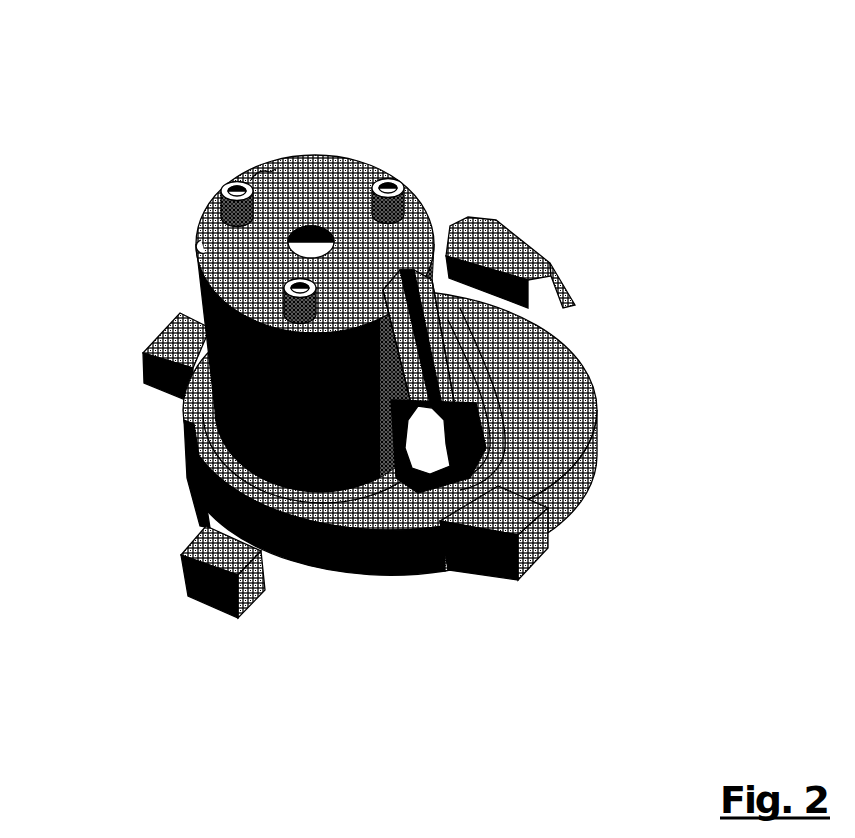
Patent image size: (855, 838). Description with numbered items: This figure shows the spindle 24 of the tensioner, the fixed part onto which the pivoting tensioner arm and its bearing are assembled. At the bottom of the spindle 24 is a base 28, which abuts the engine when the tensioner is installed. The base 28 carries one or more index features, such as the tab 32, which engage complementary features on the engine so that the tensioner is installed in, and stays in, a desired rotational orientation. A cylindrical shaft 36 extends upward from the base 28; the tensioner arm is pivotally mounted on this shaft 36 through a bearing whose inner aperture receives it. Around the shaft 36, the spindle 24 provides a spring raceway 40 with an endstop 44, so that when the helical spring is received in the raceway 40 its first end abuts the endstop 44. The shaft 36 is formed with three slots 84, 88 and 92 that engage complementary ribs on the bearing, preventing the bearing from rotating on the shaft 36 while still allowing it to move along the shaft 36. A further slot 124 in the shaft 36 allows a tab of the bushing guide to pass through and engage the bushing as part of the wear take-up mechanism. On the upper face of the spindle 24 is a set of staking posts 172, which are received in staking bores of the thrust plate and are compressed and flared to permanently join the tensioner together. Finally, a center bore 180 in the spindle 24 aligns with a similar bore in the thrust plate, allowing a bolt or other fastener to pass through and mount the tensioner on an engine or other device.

The spindle 24 is at (430, 130).
The base 28 is at (532, 557).
The tab 32 is at (200, 580).
The cylindrical shaft 36 is at (255, 395).
The spring raceway 40 is at (507, 320).
The endstop 44 is at (528, 490).
The slot 84 is at (263, 165).
The slot 88 is at (196, 238).
The slot 92 is at (400, 278).
The slot 124 is at (420, 430).
The staking posts 172 is at (383, 176).
The center bore 180 is at (310, 247).